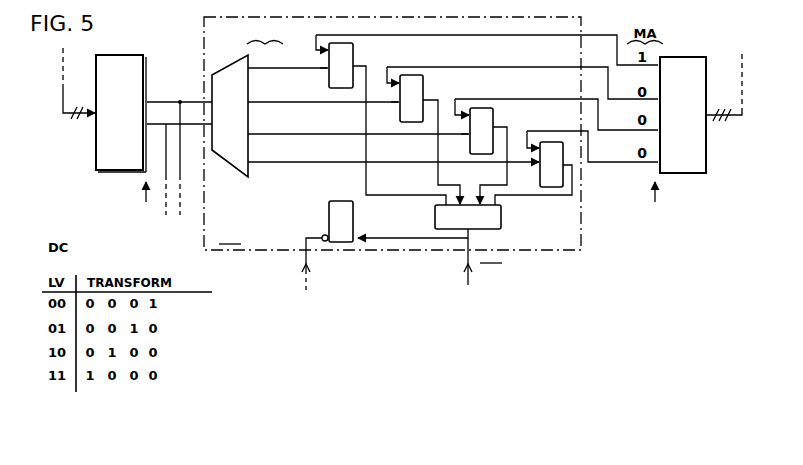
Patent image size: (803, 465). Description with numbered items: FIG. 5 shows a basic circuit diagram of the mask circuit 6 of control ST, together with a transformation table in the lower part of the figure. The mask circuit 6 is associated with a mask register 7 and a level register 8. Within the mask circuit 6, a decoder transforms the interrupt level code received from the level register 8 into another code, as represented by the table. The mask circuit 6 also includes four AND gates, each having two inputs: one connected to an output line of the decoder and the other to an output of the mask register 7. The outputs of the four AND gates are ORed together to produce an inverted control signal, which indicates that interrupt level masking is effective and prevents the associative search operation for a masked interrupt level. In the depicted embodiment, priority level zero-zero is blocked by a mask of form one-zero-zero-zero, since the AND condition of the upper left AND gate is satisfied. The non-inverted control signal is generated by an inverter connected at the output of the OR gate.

The mask circuit 6 is at (583, 233).
The mask register 7 is at (707, 162).
The level register 8 is at (101, 155).